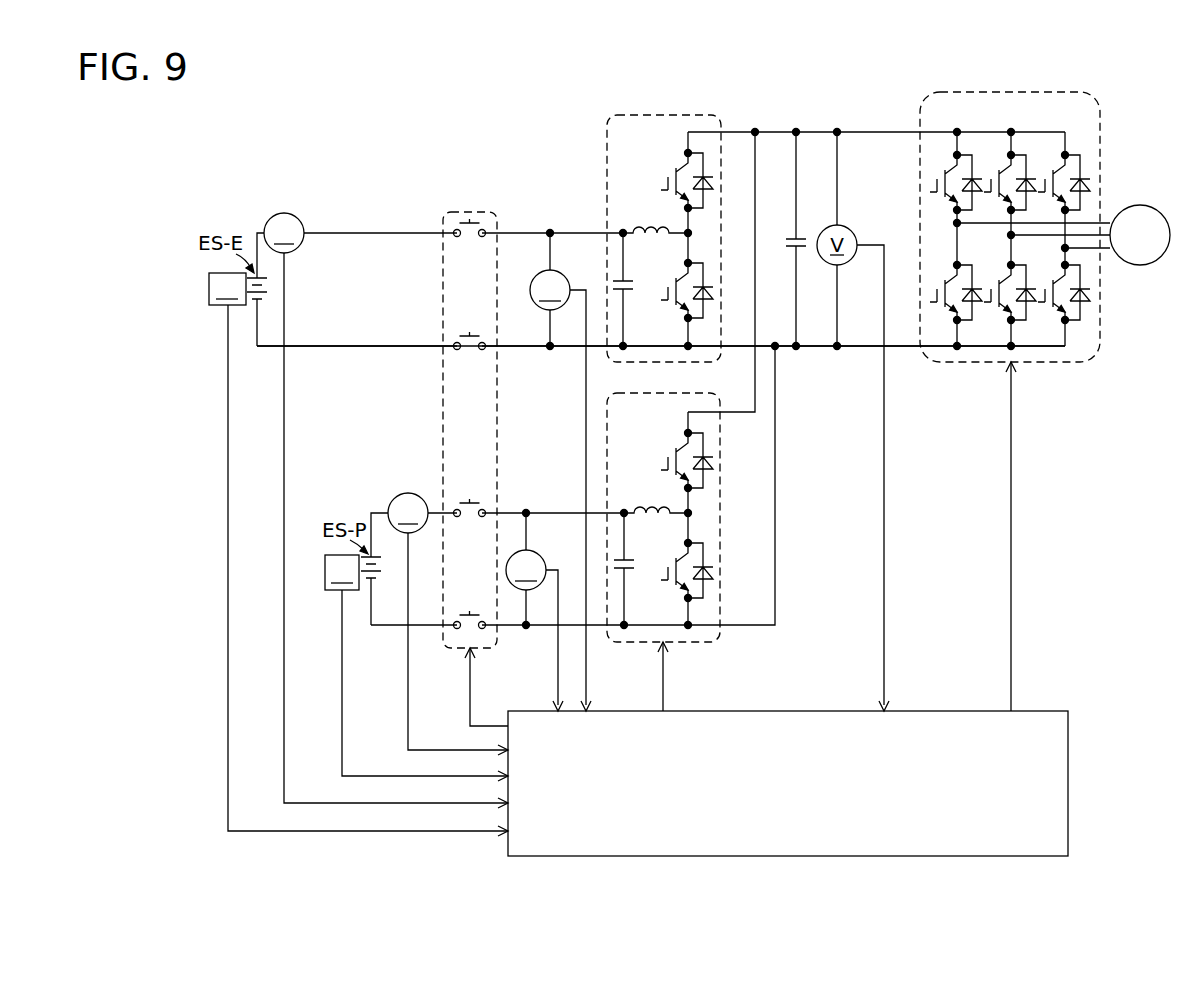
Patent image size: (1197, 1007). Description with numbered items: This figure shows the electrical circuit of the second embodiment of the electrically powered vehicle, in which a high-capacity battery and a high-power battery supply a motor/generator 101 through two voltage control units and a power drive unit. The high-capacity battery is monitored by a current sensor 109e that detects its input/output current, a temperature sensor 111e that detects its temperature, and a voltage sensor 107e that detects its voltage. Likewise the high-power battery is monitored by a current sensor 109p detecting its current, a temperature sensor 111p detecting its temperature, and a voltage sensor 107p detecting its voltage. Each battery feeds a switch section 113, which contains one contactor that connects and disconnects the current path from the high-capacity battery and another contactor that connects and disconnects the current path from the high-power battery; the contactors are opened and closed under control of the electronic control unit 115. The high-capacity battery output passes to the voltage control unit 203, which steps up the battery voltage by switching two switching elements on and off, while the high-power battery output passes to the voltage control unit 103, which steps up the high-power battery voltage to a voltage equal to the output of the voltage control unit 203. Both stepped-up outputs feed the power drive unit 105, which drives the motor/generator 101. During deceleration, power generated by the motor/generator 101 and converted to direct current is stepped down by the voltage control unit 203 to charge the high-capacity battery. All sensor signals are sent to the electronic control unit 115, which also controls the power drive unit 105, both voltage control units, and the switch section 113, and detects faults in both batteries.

The VCU 203 is at (606, 134).
The VCU 103 is at (712, 640).
The PDU 105 is at (1062, 362).
The motor/generator 101 is at (1137, 265).
The ECU 115 is at (1068, 770).
The switch section 113 is at (441, 396).
The current sensor 109e is at (300, 249).
The temperature sensor 111e is at (221, 305).
The voltage sensor 107e is at (575, 266).
The current sensor 109p is at (396, 498).
The temperature sensor 111p is at (334, 590).
The voltage sensor 107p is at (542, 556).